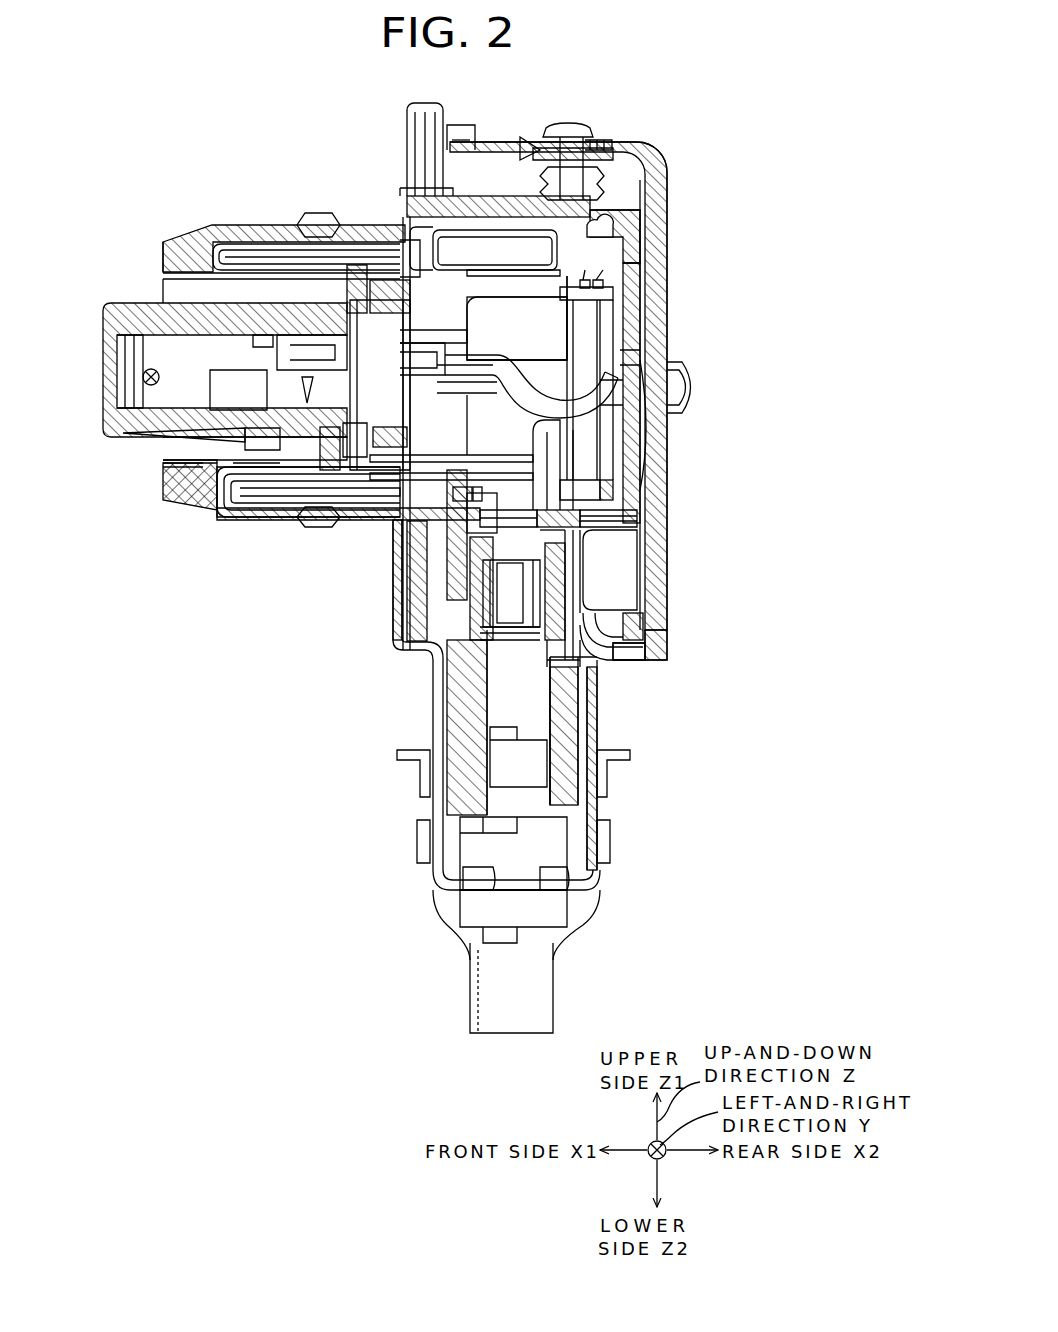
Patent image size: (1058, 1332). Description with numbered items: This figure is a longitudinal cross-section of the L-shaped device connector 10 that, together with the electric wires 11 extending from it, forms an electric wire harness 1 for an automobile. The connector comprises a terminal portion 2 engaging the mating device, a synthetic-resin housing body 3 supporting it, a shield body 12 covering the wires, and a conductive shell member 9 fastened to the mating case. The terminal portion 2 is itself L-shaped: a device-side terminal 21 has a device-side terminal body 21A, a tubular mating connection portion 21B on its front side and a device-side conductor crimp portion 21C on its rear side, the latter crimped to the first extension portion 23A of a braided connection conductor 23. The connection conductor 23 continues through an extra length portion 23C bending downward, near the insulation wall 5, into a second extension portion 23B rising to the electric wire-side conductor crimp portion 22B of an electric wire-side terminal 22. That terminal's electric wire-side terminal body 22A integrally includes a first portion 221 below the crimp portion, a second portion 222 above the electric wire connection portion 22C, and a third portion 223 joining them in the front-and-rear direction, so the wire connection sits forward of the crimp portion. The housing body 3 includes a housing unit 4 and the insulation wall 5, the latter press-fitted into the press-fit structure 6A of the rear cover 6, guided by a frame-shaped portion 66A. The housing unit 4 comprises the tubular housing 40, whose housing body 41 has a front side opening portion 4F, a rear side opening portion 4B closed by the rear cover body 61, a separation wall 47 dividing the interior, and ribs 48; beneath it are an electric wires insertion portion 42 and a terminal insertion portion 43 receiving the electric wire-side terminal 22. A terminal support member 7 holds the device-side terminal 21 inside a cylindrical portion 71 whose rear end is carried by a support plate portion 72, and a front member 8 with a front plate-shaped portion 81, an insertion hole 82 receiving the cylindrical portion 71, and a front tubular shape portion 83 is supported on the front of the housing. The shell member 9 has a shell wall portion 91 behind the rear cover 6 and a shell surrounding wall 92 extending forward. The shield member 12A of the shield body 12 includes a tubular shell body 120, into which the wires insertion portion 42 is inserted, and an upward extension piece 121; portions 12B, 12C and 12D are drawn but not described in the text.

The electric wire harness 1 is at (714, 103).
The terminal portion 2 is at (794, 1012).
The housing body 3 is at (700, 1008).
The housing unit 4 is at (583, 680).
The rear side opening portion 4B is at (625, 280).
The front side opening portion 4F is at (214, 513).
The insulation wall 5 is at (528, 318).
The rear cover 6 is at (682, 387).
The press-fit structure 6A is at (517, 328).
The frame-shaped portion 66A is at (505, 285).
The terminal support member 7 is at (146, 308).
The front member 8 is at (192, 235).
The shell member 9 is at (530, 572).
The device connector 10 is at (626, 143).
The electric wire 11 is at (515, 1012).
The shield body 12 is at (703, 705).
The shield member 12A is at (603, 714).
The lower end portion 12B is at (598, 906).
The flange 12C is at (620, 780).
The inner holder 12D is at (545, 848).
The device-side terminal 21 is at (76, 447).
The device-side terminal body 21A is at (245, 440).
The mating connection portion 21B is at (138, 438).
The device-side conductor crimp portion 21C is at (163, 490).
The electric wire-side terminal 22 is at (790, 315).
The electric wire-side terminal body 22A is at (735, 420).
The electric wire-side conductor crimp portion 22B is at (660, 340).
The electric wire connection portion 22C is at (655, 560).
The connection conductor 23 is at (630, 250).
The first extension portion 23A is at (463, 355).
The second extension portion 23B is at (640, 300).
The extra length portion 23C is at (550, 380).
The housing 40 is at (308, 492).
The housing body 41 is at (347, 520).
The electric wires insertion portion 42 is at (570, 693).
The terminal insertion portion 43 is at (648, 625).
The separation wall 47 is at (432, 405).
The rib 48 is at (397, 470).
The rear cover body 61 is at (665, 355).
The cylindrical portion 71 is at (140, 304).
The support plate portion 72 is at (315, 320).
The front plate-shaped portion 81 is at (325, 228).
The insertion hole 82 is at (300, 300).
The front tubular shape portion 83 is at (163, 263).
The shell wall portion 91 is at (650, 588).
The shell surrounding wall 92 is at (557, 612).
The shell body 120 is at (433, 686).
The extension piece 121 is at (413, 622).
The first portion 221 is at (632, 390).
The second portion 222 is at (600, 493).
The third portion 223 is at (650, 453).